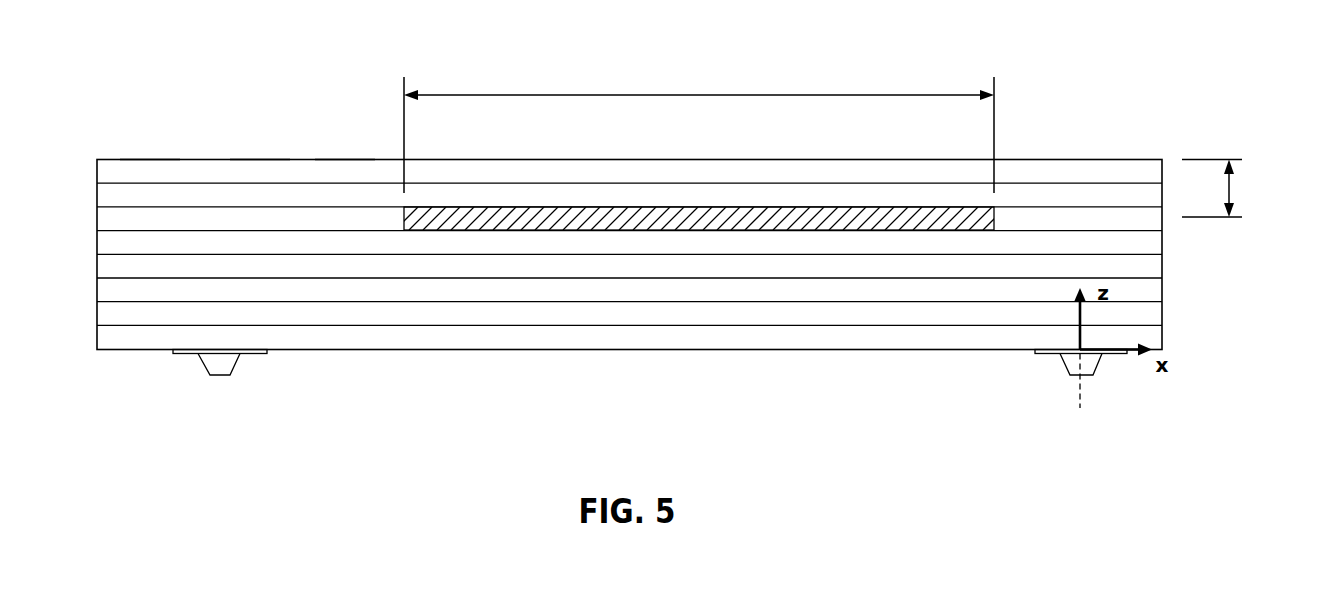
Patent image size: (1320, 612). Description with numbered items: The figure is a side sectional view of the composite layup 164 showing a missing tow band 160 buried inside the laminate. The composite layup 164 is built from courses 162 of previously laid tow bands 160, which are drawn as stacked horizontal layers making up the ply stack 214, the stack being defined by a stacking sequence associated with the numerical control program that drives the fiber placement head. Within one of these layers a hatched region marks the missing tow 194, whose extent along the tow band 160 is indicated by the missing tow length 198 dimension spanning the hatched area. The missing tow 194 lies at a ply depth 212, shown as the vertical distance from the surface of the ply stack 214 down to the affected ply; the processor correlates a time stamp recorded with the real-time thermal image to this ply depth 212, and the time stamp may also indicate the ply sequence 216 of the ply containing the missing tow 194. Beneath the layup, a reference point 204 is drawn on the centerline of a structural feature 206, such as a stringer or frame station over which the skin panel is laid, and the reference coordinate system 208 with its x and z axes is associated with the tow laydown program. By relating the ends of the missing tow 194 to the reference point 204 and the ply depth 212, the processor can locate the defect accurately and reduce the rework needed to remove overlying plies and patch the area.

The tow band 160 is at (152, 158).
The courses 162 is at (257, 158).
The composite layup 164 is at (345, 158).
The missing tow 194 is at (505, 205).
The missing tow length 198 is at (698, 94).
The reference point 204 is at (1097, 358).
The structural feature 206 is at (207, 365).
The reference coordinate system 208 is at (1098, 358).
The ply depth 212 is at (1230, 185).
The ply stack 214 is at (72, 162).
The ply sequence 216 is at (1070, 151).